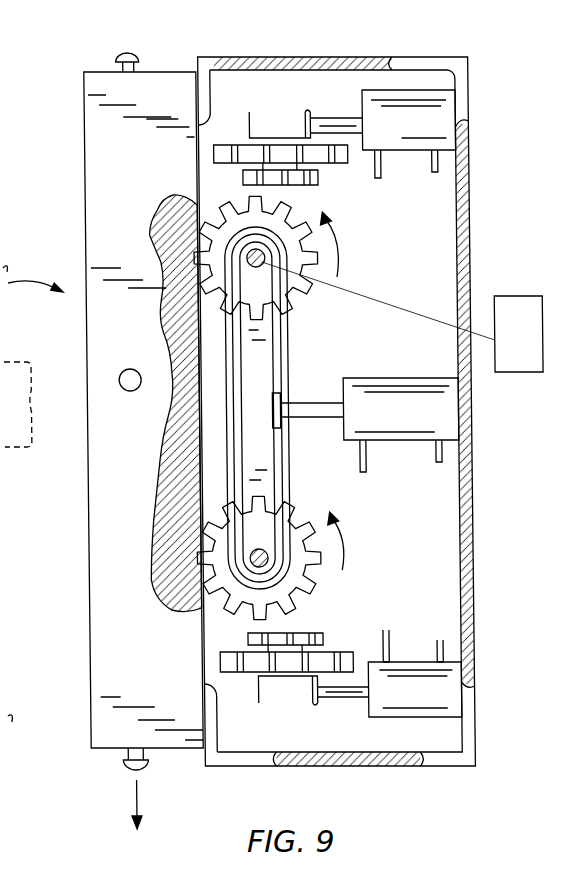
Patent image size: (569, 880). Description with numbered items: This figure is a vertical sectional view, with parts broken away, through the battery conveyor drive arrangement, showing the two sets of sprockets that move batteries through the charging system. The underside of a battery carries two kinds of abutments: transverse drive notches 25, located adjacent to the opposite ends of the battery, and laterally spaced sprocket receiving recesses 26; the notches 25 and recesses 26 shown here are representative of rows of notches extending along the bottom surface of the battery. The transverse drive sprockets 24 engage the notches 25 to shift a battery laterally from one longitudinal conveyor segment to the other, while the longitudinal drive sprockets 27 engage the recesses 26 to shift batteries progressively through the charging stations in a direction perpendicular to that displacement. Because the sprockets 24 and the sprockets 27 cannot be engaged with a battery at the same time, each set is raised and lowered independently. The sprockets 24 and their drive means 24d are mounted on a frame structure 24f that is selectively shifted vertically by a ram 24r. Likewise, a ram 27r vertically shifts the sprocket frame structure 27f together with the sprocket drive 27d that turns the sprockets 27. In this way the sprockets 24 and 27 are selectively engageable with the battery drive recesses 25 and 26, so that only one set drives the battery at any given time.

The transverse drive sprockets 24 is at (250, 703).
The drive means 24d is at (313, 633).
The frame structure 24f is at (245, 700).
The ram 24r is at (409, 705).
The notches 25 is at (199, 672).
The sprocket receiving recesses 26 is at (155, 210).
The longitudinal drive sprockets 27 is at (213, 222).
The sprocket drive 27d is at (226, 481).
The sprocket frame structure 27f is at (255, 362).
The ram 27r is at (445, 425).